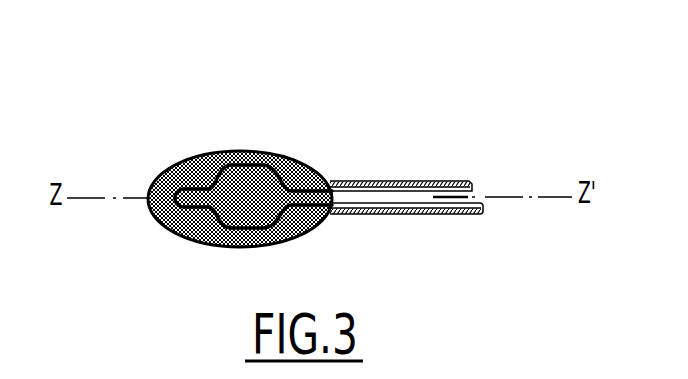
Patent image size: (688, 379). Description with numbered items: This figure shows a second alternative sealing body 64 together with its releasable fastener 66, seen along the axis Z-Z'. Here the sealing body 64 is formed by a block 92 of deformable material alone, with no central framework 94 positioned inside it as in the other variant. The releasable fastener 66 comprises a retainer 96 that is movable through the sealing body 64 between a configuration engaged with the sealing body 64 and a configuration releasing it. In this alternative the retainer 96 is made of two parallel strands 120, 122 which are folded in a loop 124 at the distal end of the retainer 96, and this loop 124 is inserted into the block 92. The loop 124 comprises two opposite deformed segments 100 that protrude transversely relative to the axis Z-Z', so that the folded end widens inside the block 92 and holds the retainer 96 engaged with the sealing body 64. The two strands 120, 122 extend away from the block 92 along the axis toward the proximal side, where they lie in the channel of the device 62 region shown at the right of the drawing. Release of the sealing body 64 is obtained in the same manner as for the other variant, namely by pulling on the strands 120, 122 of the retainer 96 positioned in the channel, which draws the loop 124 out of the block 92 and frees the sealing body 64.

The tube / catheter shaft 62 is at (406, 184).
The sealing body 64 is at (162, 170).
The releasable fastener 66 is at (221, 158).
The block 92 is at (262, 153).
The central framework 94 is at (221, 233).
The retainer 96 is at (418, 187).
The deformed segments 100 is at (214, 165).
The strand 120 is at (375, 186).
The strand 122 is at (365, 215).
The loop 124 is at (193, 179).